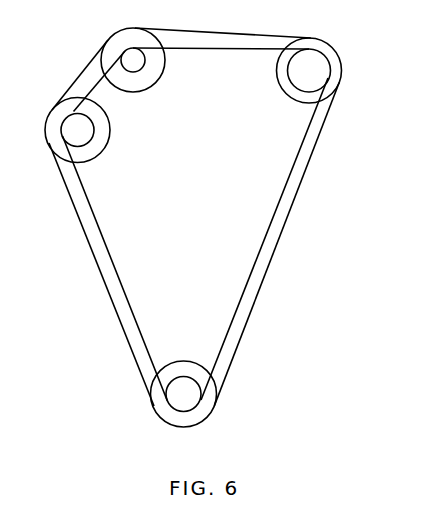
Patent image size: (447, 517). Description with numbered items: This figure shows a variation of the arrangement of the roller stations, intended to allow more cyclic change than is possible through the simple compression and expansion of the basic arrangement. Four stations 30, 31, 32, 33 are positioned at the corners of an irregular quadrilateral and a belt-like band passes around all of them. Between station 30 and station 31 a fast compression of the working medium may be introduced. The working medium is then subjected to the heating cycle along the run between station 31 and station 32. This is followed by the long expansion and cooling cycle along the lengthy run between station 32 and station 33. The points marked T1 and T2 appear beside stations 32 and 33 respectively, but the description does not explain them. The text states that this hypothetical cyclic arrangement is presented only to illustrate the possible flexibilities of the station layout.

The station 30 is at (89, 130).
The station 31 is at (135, 68).
The station 32 is at (298, 75).
The station 33 is at (184, 384).
The tension point T1 is at (368, 64).
The tension point T2 is at (230, 419).